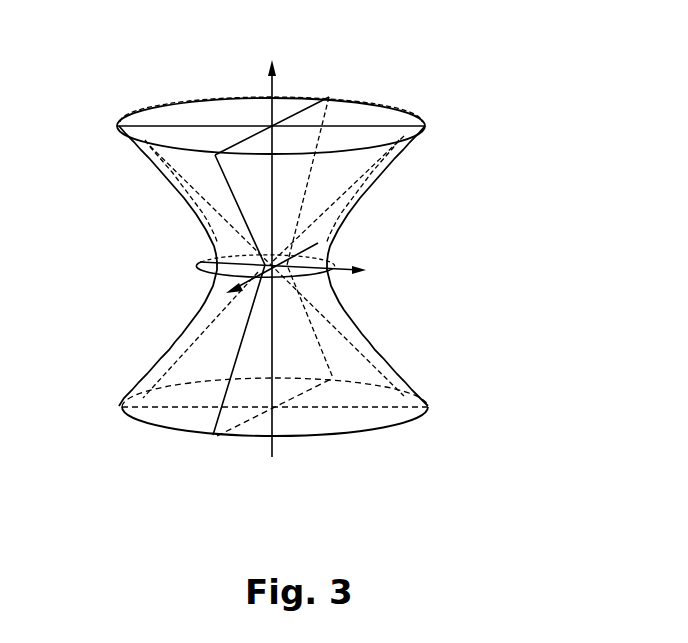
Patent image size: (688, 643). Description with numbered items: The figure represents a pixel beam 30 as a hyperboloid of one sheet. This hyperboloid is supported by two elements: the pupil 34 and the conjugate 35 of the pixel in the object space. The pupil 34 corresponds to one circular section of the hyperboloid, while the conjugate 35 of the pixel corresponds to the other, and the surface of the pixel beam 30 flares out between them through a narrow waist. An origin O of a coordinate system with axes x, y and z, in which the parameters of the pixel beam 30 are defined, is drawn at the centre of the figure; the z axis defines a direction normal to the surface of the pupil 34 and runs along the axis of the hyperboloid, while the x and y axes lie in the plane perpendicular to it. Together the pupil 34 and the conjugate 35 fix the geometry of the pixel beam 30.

The pixel beam 30 is at (328, 72).
The pupil 34 is at (390, 113).
The conjugate of the pixel 35 is at (340, 267).